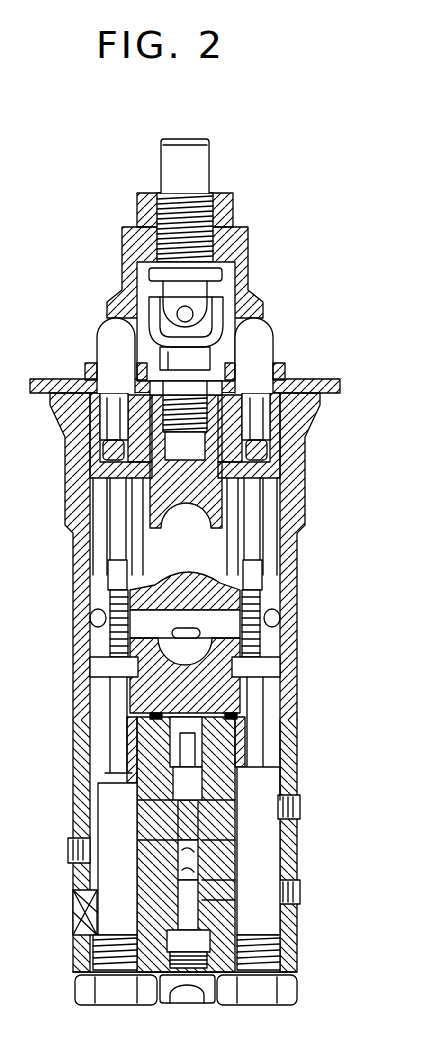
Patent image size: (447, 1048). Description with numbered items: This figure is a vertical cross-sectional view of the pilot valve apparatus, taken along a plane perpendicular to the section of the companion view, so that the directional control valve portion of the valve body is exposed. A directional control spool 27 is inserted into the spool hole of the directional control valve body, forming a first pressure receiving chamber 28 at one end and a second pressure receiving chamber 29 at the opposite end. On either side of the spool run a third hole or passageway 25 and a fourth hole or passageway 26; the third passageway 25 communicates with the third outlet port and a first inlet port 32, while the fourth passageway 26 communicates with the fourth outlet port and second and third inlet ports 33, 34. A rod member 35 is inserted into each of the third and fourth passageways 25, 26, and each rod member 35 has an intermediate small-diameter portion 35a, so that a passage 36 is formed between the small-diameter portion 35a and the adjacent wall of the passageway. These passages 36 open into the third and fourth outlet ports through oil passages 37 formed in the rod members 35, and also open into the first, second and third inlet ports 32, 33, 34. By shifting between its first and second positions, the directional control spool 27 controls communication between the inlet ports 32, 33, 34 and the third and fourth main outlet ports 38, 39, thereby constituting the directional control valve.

The third hole or passageway 25 is at (98, 757).
The fourth hole or passageway 26 is at (284, 754).
The directional control spool 27 is at (180, 791).
The first pressure receiving chamber 28 is at (211, 702).
The second pressure receiving chamber 29 is at (98, 957).
The first inlet port 32 is at (145, 865).
The second inlet port 33 is at (95, 667).
The third inlet port 34 is at (282, 668).
The rod member 35 is at (105, 818).
The intermediate small-diameter portion 35a is at (280, 838).
The passage 36 is at (348, 785).
The oil passage 37 is at (120, 688).
The third main outlet port 38 is at (207, 867).
The fourth main outlet port 39 is at (210, 840).